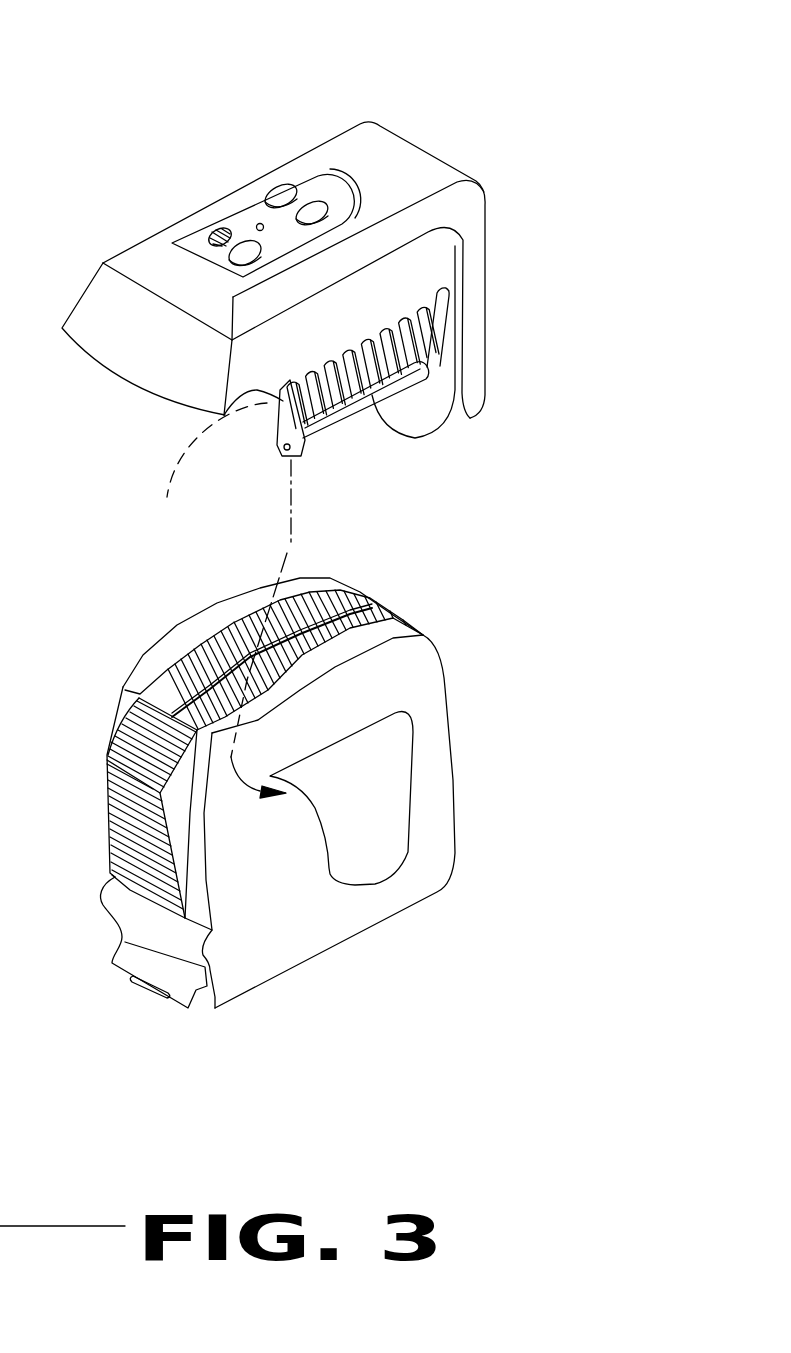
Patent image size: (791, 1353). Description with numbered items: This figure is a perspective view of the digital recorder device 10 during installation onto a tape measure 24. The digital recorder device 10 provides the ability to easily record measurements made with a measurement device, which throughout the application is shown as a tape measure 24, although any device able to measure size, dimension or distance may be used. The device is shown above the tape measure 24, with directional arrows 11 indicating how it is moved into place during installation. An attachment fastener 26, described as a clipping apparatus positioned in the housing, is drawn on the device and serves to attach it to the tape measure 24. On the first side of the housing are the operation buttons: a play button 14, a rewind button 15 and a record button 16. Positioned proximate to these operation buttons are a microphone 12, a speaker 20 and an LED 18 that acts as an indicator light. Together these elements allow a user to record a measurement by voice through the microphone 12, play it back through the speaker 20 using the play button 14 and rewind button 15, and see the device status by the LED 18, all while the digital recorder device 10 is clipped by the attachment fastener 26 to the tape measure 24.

The digital recorder device 10 is at (487, 157).
The directional arrows 11 is at (290, 553).
The microphone 12 is at (212, 238).
The play button 14 is at (272, 187).
The rewind button 15 is at (313, 210).
The record button 16 is at (232, 260).
The LED 18 is at (257, 224).
The speaker 20 is at (222, 600).
The tape measure 24 is at (343, 907).
The attachment fastener 26 is at (383, 395).